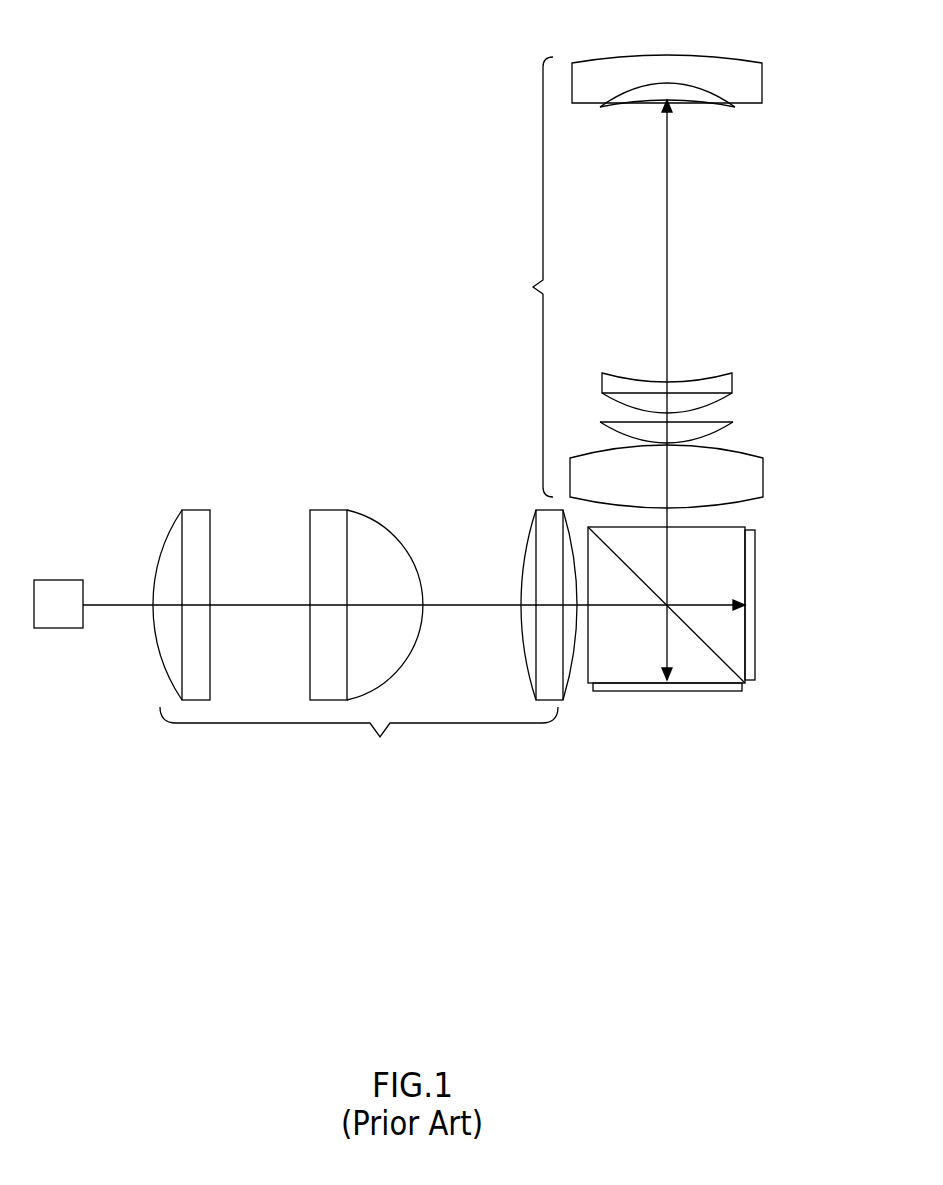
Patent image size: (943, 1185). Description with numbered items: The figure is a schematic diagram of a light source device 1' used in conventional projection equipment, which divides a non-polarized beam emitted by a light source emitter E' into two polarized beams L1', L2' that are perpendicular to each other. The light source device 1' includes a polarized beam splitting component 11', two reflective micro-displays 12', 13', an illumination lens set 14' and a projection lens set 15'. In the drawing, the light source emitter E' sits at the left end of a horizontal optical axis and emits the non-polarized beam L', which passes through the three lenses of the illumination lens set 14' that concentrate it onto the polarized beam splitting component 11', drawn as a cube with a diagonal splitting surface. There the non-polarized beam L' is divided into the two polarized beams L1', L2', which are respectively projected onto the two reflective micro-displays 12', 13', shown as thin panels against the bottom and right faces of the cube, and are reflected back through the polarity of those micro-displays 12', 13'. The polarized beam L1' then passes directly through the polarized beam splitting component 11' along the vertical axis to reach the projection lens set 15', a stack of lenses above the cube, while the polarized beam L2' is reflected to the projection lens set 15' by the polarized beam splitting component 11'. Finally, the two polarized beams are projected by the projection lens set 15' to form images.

The light source device 1' is at (428, 426).
The light source emitter E' is at (58, 499).
The non-polarized beam L' is at (335, 487).
The illumination lens set 14' is at (365, 644).
The projection lens set 15' is at (623, 281).
The polarized beam splitting component 11' is at (661, 687).
The reflective micro-display 12' is at (682, 739).
The reflective micro-display 13' is at (784, 569).
The polarized beam L1' is at (677, 471).
The polarized beam L2' is at (694, 651).